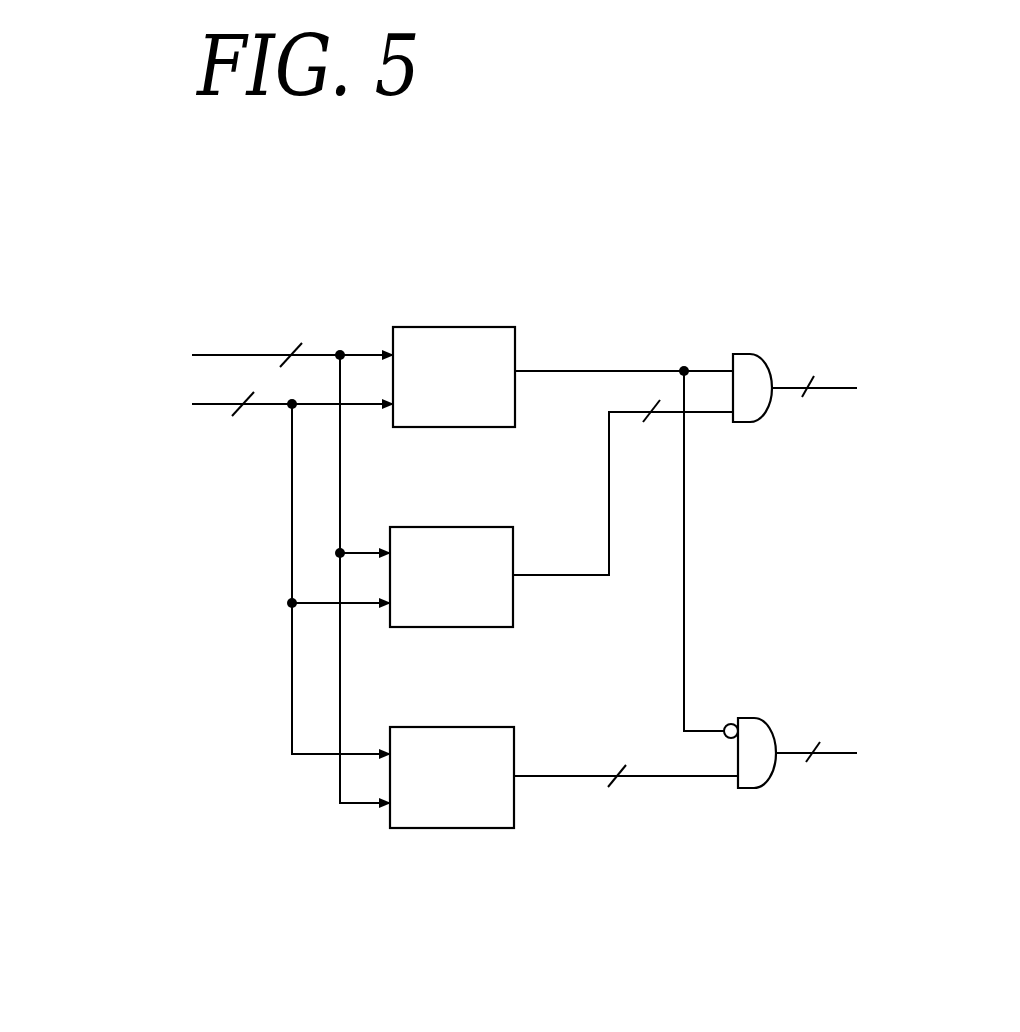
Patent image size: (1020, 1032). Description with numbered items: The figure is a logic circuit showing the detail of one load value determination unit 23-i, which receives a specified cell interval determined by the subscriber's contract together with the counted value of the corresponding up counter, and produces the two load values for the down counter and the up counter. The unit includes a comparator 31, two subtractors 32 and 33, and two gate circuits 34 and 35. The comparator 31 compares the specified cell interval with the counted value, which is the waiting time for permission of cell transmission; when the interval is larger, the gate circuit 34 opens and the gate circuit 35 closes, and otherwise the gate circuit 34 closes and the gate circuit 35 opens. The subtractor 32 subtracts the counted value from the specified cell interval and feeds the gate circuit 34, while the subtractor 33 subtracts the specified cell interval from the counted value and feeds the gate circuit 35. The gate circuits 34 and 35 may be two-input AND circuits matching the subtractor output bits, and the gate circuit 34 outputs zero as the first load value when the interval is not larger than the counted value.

The load value determination unit 23-i is at (295, 877).
The comparator 31 is at (495, 326).
The subtractor 32 is at (437, 526).
The subtractor 33 is at (438, 726).
The gate circuit 34 is at (747, 352).
The gate circuit 35 is at (755, 717).